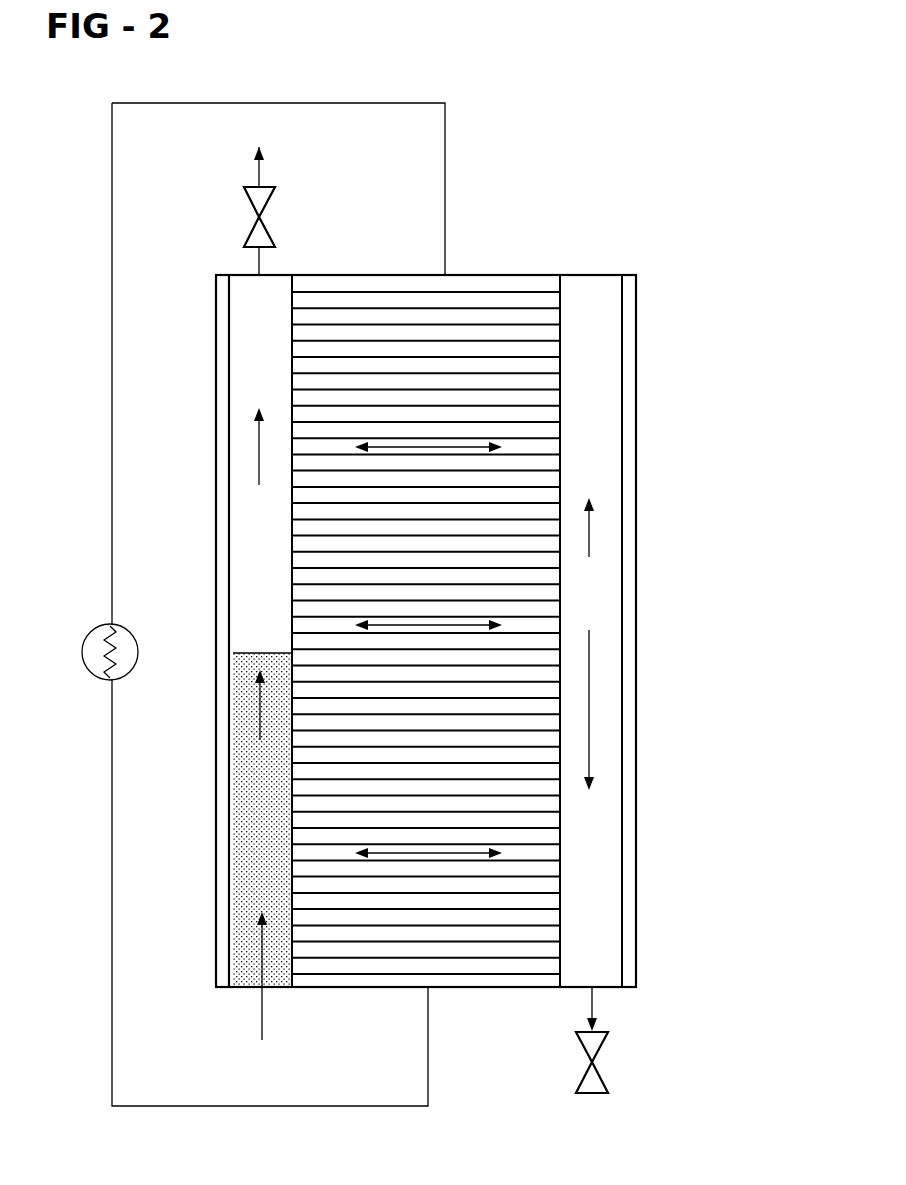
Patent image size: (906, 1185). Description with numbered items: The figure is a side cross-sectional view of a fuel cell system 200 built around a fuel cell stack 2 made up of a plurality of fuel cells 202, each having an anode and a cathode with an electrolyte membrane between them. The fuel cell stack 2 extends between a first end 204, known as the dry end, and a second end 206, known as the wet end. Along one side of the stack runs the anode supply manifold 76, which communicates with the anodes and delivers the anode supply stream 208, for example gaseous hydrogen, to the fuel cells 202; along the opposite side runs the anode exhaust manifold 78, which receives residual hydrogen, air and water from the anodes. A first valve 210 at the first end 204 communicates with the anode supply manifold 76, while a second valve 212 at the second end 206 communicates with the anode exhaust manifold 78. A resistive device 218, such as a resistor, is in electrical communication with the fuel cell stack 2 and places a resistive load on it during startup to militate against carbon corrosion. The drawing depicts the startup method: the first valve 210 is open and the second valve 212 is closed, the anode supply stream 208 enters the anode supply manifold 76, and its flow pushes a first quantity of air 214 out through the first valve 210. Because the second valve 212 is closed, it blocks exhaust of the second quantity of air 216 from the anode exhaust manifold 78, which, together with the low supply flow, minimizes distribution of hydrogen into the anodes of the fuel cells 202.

The fuel cell stack 2 is at (522, 270).
The anode supply manifold 76 is at (250, 872).
The anode exhaust manifold 78 is at (606, 856).
The fuel cell system 200 is at (718, 275).
The fuel cells 202 is at (545, 358).
The first end 204 is at (492, 274).
The second end 206 is at (440, 988).
The anode supply stream 208 is at (260, 708).
The first valve 210 is at (250, 205).
The second valve 212 is at (605, 1043).
The first quantity of air 214 is at (258, 172).
The second quantity of air 216 is at (552, 408).
The resistive device 218 is at (83, 643).